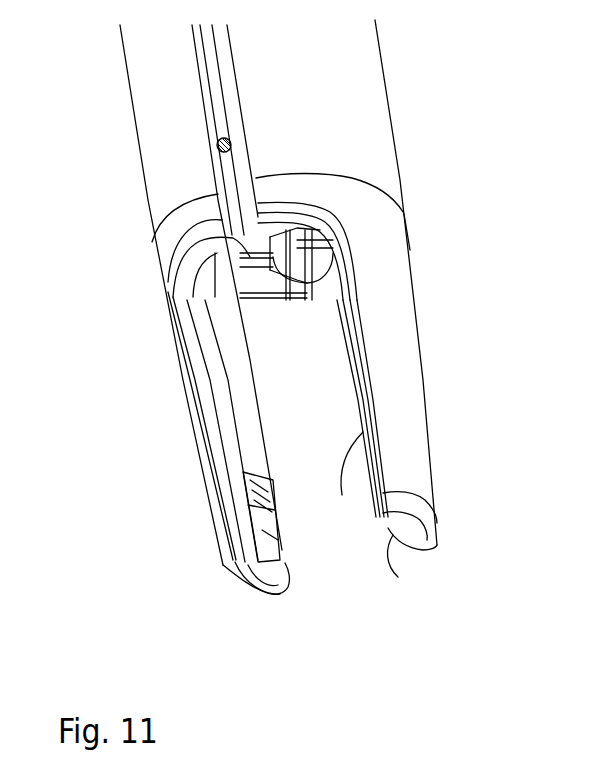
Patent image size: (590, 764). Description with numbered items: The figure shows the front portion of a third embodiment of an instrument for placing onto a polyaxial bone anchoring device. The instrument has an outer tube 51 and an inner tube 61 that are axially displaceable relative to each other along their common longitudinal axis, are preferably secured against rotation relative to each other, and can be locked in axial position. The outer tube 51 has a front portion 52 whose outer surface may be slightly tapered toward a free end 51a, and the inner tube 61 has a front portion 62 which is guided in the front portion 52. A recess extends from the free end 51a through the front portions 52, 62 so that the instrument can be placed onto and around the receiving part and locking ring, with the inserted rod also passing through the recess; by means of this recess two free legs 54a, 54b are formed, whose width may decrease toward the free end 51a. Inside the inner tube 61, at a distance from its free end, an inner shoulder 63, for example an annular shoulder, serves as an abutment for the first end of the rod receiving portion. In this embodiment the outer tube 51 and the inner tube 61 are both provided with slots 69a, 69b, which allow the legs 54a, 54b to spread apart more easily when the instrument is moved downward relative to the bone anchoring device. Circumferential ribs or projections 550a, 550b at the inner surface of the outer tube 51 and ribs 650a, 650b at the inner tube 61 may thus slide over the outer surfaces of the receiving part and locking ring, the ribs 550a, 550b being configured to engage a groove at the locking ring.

The outer tube 51 is at (158, 114).
The free end of the outer tube 51a is at (430, 550).
The front portion of the outer tube 52 is at (428, 265).
The free leg 54a is at (190, 405).
The free leg 54b is at (398, 358).
The inner tube 61 is at (240, 275).
The front portion of the inner tube 62 is at (207, 318).
The inner shoulder 63 is at (340, 262).
The slot 69a is at (212, 137).
The slot 69b is at (323, 247).
The circumferential rib 550a is at (270, 583).
The circumferential rib 550b is at (398, 577).
The circumferential rib 650a is at (276, 481).
The circumferential rib 650b is at (342, 495).